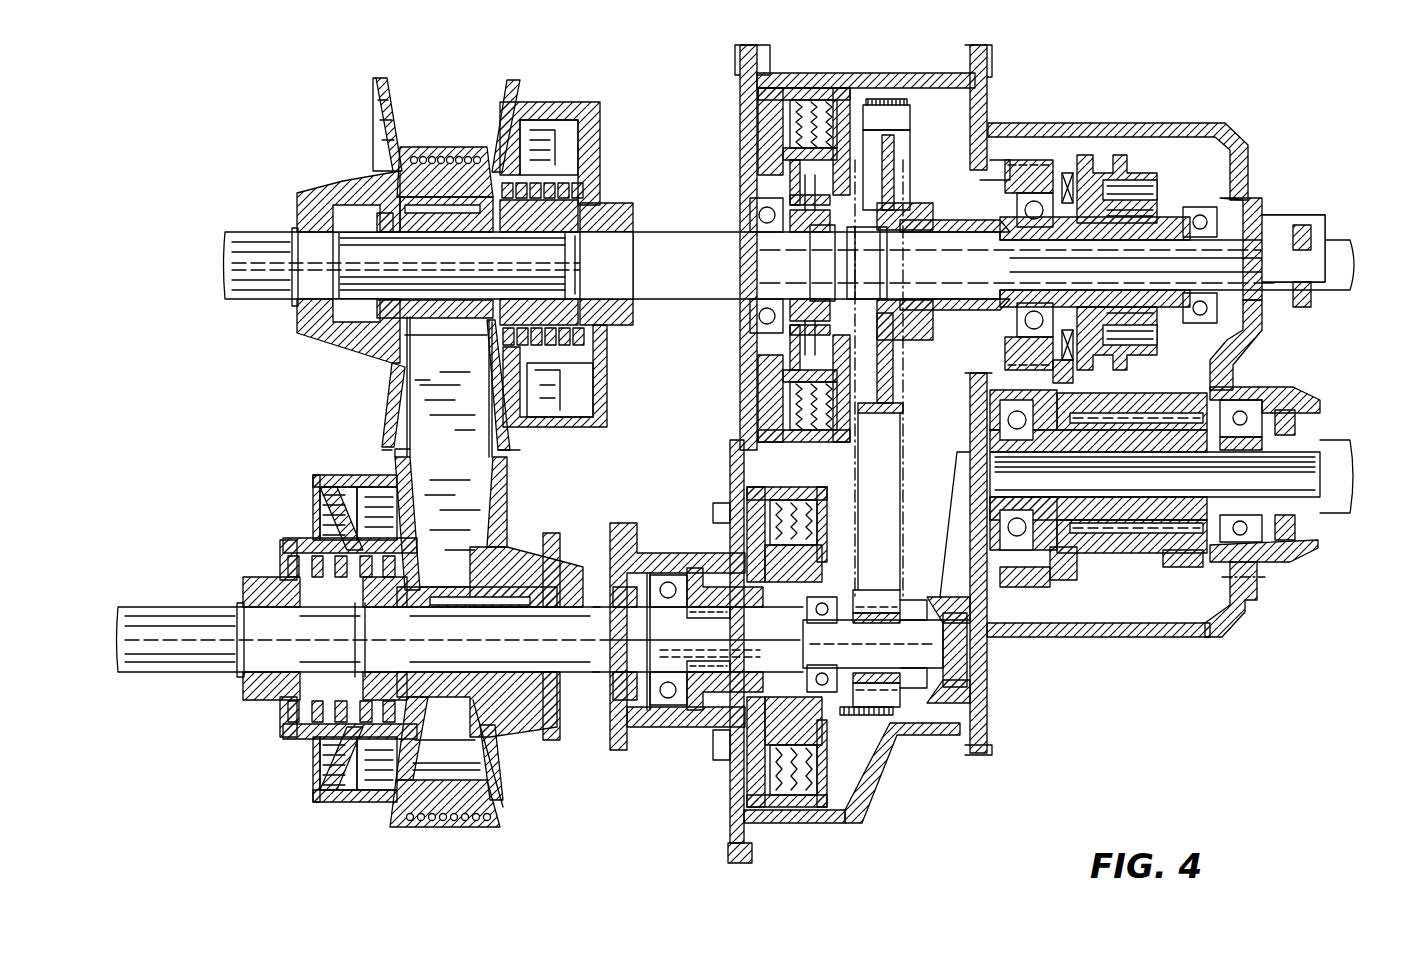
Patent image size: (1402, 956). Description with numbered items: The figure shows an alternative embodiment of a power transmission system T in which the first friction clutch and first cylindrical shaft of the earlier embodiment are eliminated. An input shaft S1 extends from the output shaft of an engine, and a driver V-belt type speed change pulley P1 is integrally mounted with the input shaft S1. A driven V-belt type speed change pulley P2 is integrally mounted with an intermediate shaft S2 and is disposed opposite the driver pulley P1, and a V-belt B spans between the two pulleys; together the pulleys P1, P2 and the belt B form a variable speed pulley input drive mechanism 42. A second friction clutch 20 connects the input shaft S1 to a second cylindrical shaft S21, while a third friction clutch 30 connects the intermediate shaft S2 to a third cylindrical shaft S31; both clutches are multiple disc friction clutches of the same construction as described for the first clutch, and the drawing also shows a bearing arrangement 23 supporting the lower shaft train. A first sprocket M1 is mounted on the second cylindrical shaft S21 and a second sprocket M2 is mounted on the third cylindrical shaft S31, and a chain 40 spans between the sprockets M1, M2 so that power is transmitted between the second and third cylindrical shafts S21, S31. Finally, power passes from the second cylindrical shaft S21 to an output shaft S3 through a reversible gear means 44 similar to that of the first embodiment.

The power transmission system T is at (658, 44).
The driver V-belt type speed change pulley P1 is at (380, 77).
The V-belt B is at (437, 148).
The input shaft S1 is at (258, 238).
The second friction clutch 20 is at (836, 73).
The first sprocket M1 is at (890, 160).
The reversible gear means 44 is at (1175, 157).
The second cylindrical shaft S21 is at (943, 218).
The variable speed pulley input drive mechanism 42 is at (618, 370).
The driven V-belt type speed change pulley P2 is at (492, 514).
The chain 40 is at (923, 465).
The second sprocket M2 is at (880, 582).
The output shaft S3 is at (1330, 438).
The intermediate shaft S2 is at (180, 660).
The bearing support 23 is at (693, 733).
The third friction clutch 30 is at (827, 777).
The third cylindrical shaft S31 is at (838, 708).